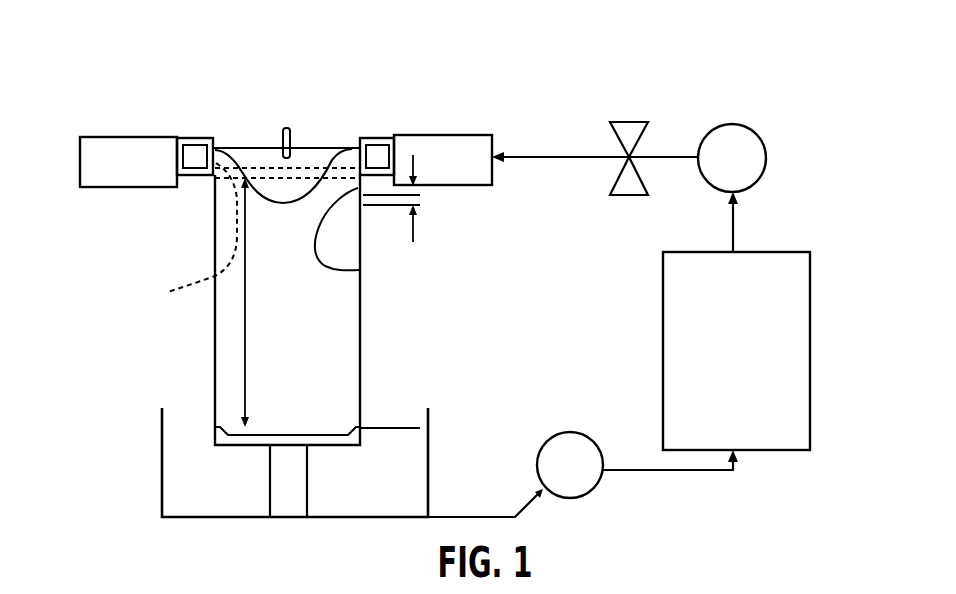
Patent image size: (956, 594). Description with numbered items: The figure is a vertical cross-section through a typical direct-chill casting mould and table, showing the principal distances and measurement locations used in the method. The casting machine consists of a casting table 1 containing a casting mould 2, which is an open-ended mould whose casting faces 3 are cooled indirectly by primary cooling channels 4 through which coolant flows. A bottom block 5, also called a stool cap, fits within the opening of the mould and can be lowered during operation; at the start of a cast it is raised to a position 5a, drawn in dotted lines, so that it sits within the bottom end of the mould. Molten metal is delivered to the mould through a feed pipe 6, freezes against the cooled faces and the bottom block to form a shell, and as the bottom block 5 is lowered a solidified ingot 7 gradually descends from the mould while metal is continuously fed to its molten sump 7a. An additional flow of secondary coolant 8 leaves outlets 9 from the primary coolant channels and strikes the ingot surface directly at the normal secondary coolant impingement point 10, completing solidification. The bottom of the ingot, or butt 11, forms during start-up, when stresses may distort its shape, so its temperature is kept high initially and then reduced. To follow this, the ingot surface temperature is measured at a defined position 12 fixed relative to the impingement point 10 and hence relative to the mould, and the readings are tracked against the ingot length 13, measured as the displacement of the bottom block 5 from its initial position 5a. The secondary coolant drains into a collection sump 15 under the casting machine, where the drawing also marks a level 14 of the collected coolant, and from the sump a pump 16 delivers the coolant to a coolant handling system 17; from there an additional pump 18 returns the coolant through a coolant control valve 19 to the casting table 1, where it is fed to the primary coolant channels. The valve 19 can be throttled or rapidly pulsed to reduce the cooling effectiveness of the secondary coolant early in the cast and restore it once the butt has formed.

The casting table 1 is at (443, 135).
The casting mould 2 is at (380, 138).
The casting faces 3 is at (216, 148).
The primary cooling channels 4 is at (190, 157).
The bottom block 5 is at (213, 439).
The raised position of bottom block 5a is at (168, 292).
The feed pipe 6 is at (292, 147).
The solidified ingot 7 is at (268, 330).
The molten sump 7a is at (303, 170).
The secondary coolant 8 is at (207, 184).
The outlets 9 is at (205, 176).
The normal secondary coolant impingement point 10 is at (360, 270).
The butt 11 is at (305, 425).
The measurement position 12 is at (362, 210).
The ingot length 13 is at (247, 357).
The liquid level 14 is at (360, 423).
The collection sump 15 is at (162, 497).
The pump 16 is at (586, 479).
The coolant handling system 17 is at (749, 361).
The additional pump 18 is at (748, 173).
The coolant control valve 19 is at (625, 122).